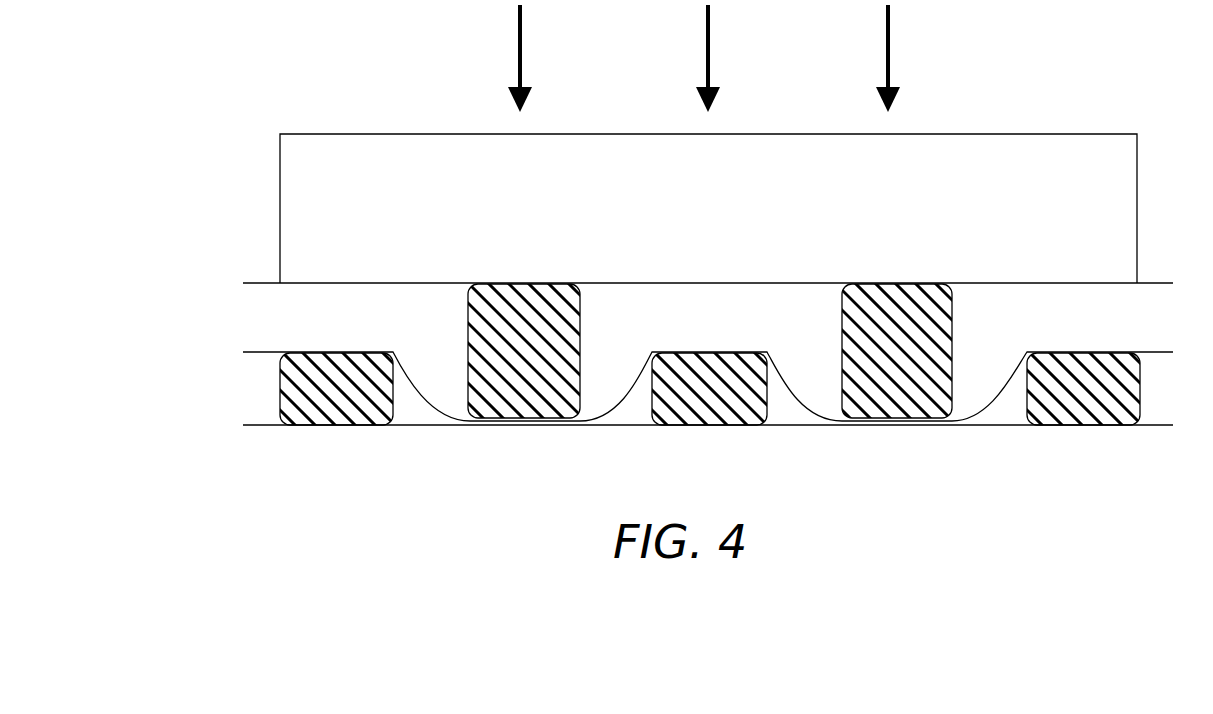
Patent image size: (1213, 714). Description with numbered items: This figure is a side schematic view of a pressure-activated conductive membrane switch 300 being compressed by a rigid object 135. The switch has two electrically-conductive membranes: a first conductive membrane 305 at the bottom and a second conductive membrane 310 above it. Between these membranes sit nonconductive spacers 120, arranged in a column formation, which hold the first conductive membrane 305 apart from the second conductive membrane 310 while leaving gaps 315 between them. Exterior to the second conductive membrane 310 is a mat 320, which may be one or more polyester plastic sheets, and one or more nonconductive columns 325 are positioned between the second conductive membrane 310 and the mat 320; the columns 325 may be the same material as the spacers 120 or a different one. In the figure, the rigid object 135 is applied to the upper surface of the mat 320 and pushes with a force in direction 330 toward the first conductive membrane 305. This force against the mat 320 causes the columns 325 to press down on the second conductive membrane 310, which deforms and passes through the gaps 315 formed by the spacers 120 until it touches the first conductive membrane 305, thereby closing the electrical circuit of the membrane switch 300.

The spacers 120 is at (280, 398).
The rigid object 135 is at (980, 133).
The conductive membrane switch 300 is at (236, 380).
The first conductive membrane 305 is at (990, 428).
The second conductive membrane 310 is at (1148, 352).
The gaps 315 is at (409, 410).
The mat 320 is at (268, 283).
The columns 325 is at (468, 346).
The direction 330 is at (518, 60).